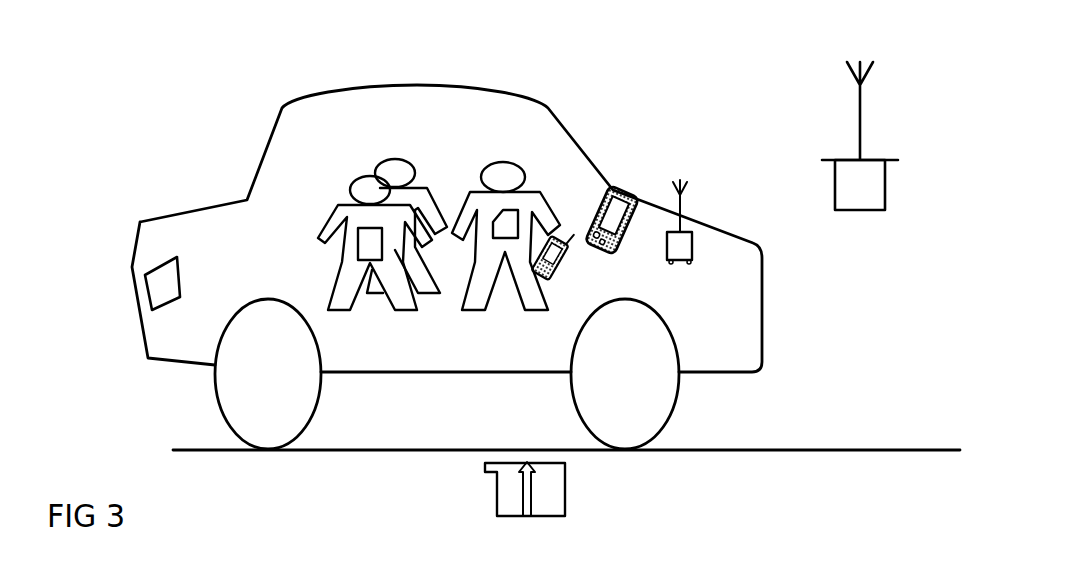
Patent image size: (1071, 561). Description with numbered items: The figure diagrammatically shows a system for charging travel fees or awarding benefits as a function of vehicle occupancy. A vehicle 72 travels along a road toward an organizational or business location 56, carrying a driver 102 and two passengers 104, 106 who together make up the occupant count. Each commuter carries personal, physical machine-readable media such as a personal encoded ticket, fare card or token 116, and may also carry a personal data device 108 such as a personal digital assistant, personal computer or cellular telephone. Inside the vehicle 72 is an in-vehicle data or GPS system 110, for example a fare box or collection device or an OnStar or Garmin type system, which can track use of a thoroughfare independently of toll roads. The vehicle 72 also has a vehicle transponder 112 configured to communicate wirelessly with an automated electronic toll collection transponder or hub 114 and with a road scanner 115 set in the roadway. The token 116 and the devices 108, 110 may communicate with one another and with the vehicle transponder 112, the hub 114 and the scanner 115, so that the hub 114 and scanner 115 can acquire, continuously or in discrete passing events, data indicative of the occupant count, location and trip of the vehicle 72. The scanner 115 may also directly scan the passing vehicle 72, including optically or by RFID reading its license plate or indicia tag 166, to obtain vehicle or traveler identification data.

The organizational or business location 56 is at (813, 450).
The vehicle 72 is at (168, 353).
The driver 102 is at (503, 160).
The passenger 104 is at (393, 160).
The passenger 106 is at (337, 212).
The personal data device 108 is at (566, 267).
The in-vehicle data or GPS system 110 is at (622, 188).
The vehicle transponder 112 is at (688, 247).
The electronic toll collection transponder or hub 114 is at (877, 210).
The road scanner 115 is at (565, 516).
The token 116 is at (362, 232).
The license plate or indicia tag 166 is at (133, 302).